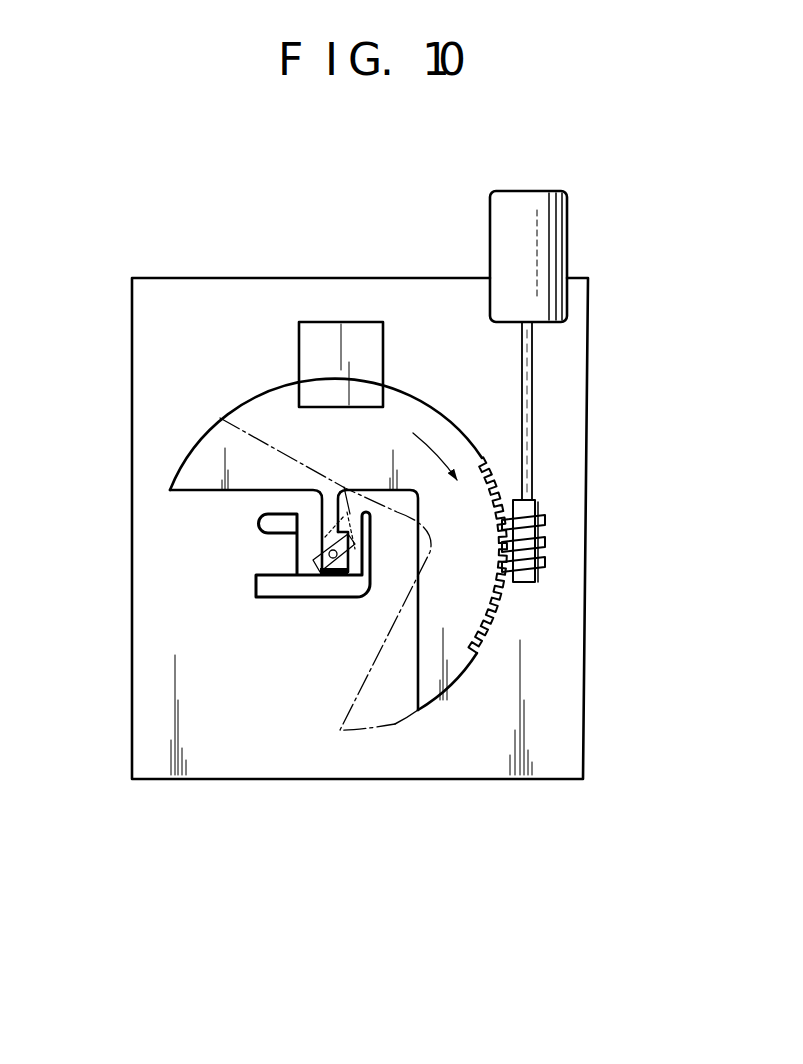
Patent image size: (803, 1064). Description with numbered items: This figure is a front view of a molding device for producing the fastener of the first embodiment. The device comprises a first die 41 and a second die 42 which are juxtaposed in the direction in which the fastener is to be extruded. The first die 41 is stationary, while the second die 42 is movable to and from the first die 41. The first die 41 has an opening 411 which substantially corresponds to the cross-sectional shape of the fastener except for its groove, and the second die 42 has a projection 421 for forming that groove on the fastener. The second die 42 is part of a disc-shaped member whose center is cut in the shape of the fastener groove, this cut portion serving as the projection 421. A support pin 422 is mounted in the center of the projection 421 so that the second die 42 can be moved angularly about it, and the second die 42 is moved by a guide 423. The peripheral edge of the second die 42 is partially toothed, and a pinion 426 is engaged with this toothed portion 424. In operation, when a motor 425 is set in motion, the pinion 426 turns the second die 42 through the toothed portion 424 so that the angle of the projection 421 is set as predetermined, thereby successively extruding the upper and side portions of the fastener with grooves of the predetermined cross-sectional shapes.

The first die 41 is at (546, 724).
The opening 411 is at (273, 597).
The second die 42 is at (460, 644).
The projection 421 is at (350, 592).
The support pin 422 is at (323, 551).
The guide 423 is at (317, 357).
The toothed portion 424 is at (500, 603).
The motor 425 is at (543, 245).
The pinion 426 is at (542, 533).